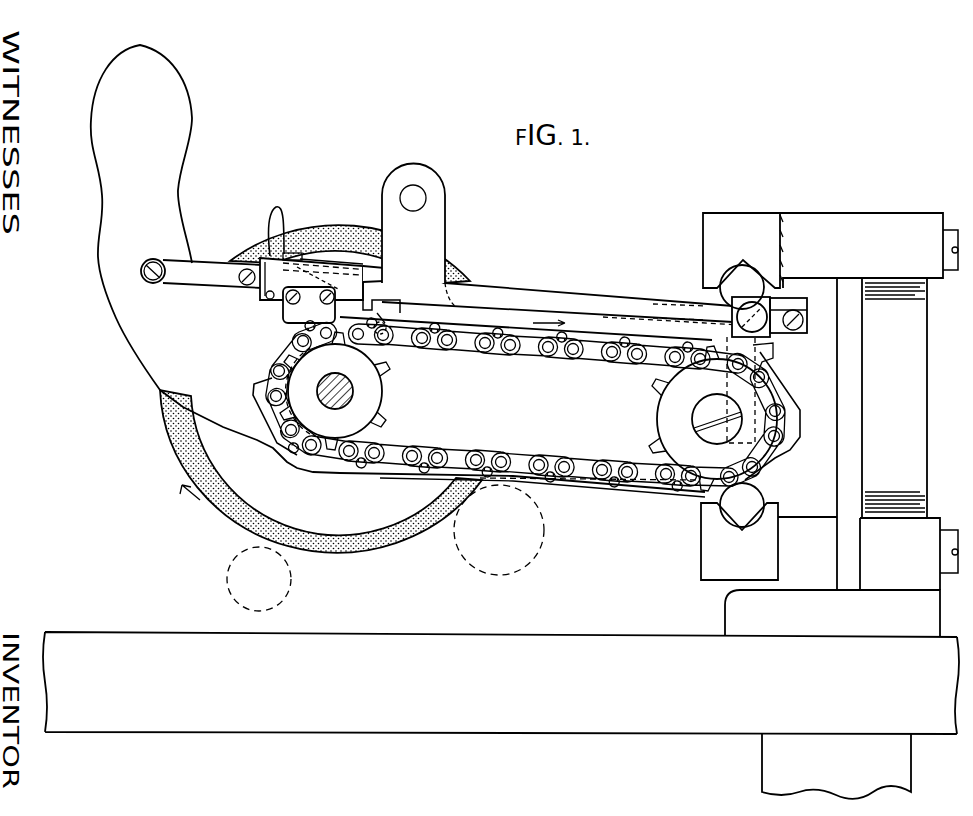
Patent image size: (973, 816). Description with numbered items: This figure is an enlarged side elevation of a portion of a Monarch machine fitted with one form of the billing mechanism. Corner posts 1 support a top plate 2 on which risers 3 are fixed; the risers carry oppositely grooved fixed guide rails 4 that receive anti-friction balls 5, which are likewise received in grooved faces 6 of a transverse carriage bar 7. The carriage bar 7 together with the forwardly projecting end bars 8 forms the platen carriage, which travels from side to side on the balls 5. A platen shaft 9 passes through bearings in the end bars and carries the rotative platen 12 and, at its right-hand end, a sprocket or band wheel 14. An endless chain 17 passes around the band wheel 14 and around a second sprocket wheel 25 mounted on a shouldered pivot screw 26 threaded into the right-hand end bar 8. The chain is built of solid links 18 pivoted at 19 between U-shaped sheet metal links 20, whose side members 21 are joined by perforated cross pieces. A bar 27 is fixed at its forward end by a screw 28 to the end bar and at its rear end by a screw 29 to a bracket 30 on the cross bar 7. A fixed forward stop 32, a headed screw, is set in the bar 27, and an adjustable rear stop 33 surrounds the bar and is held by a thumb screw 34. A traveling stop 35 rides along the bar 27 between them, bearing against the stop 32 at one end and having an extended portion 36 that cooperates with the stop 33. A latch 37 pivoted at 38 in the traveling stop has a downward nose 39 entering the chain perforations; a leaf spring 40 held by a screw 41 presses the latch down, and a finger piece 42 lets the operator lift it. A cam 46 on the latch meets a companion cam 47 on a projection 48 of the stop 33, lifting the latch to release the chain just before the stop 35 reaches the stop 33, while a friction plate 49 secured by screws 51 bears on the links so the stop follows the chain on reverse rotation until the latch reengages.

The corner posts 1 is at (836, 766).
The top plate 2 is at (501, 683).
The risers 3 is at (841, 424).
The fixed guide rails 4 is at (742, 396).
The anti-friction rollers or balls 5 is at (742, 396).
The oppositely grooved faces 6 is at (719, 292).
The transverse carriage bar 7 is at (762, 345).
The end bars 8 is at (525, 404).
The platen shaft 9 is at (318, 400).
The platen 12 is at (182, 464).
The sprocket, band or driving wheel 14 is at (335, 391).
The chain 17 is at (628, 485).
The solid links 18 is at (488, 462).
The pivots 19 is at (497, 350).
The sheet metal links 20 is at (571, 491).
The side members 21 is at (596, 367).
The sprocket or band wheel 25 is at (672, 416).
The pivot screw 26 is at (717, 418).
The bar 27 is at (527, 298).
The screw 28 is at (158, 284).
The screw 29 is at (803, 325).
The bracket 30 is at (795, 310).
The forward stop 32 is at (250, 263).
The adjustable stop 33 is at (735, 300).
The thumb screw 34 is at (768, 333).
The traveling stop 35 is at (329, 266).
The extended portion 36 is at (402, 283).
The latch 37 is at (384, 302).
The pivot 38 is at (268, 299).
The engaging member or nose 39 is at (377, 313).
The leaf spring 40 is at (357, 265).
The screw 41 is at (300, 253).
The finger piece or handle 42 is at (273, 217).
The cam 46 is at (387, 324).
The companion cam 47 is at (732, 318).
The projection 48 is at (732, 302).
The friction plate 49 is at (285, 318).
The screws 51 is at (320, 296).